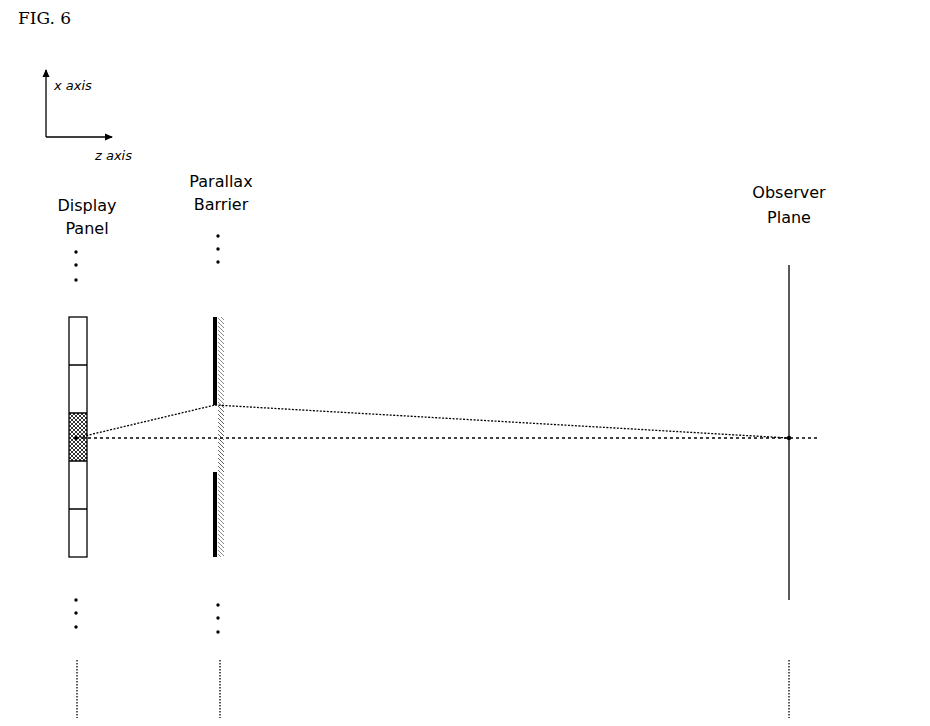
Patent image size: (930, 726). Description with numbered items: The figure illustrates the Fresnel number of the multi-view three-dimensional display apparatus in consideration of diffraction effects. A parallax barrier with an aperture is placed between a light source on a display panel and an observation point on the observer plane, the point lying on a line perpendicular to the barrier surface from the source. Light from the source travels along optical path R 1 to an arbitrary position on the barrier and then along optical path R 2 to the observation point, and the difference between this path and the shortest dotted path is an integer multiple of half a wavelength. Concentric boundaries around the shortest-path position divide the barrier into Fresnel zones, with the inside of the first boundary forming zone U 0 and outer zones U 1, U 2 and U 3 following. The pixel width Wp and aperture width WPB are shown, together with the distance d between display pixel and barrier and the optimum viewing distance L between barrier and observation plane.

The Fresnel zone U0 0 is at (231, 438).
The Fresnel zone U1 / optical path R1 1 is at (160, 441).
The Fresnel zone U2 / optical path R2 2 is at (502, 440).
The Fresnel zone U3 3 is at (230, 440).
The display pixel width Wp is at (54, 415).
The width of the PB aperture WPB is at (207, 500).
The distance between display pixel and PB d is at (218, 688).
The optimum viewing distance between PB and observation plane L is at (787, 688).